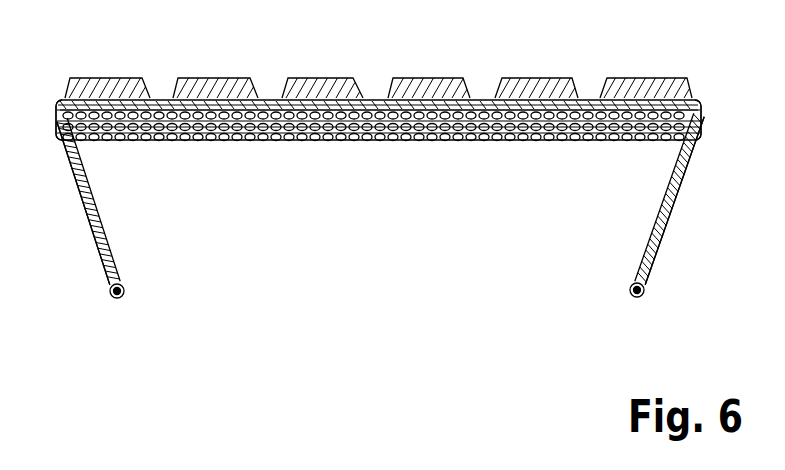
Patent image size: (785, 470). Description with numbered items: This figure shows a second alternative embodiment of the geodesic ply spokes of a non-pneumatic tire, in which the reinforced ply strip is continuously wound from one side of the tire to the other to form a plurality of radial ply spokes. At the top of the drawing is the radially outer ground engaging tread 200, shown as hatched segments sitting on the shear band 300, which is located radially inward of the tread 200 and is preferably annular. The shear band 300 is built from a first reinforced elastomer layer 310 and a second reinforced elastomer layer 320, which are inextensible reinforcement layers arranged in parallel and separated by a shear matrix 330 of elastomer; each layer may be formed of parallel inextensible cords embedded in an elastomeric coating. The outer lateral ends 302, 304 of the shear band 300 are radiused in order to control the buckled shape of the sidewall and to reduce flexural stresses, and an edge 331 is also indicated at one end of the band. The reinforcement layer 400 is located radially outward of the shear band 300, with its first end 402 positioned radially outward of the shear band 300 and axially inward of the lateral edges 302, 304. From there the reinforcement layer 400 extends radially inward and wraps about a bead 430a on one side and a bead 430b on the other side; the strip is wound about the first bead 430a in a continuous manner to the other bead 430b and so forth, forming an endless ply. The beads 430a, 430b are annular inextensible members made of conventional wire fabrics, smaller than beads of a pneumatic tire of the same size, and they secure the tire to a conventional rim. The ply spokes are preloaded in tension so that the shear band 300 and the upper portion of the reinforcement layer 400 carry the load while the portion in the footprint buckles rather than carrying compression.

The tread 200 is at (353, 93).
The shear band 300 is at (402, 140).
The outer lateral end of shear band 302 is at (700, 100).
The outer lateral end of shear band 304 is at (57, 104).
The first reinforced elastomer layer 310 is at (60, 117).
The second reinforced elastomer layer 320 is at (175, 143).
The shear matrix 330 is at (512, 134).
The edge of second fibrous layer 331 is at (705, 112).
The reinforcement layer 400 is at (100, 224).
The first end of reinforcement strip 402 is at (88, 219).
The bead 430a is at (128, 293).
The bead 430b is at (648, 291).